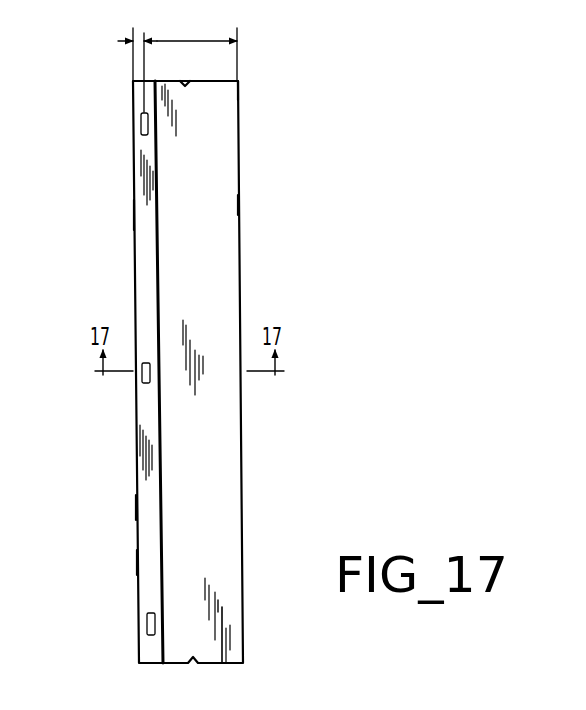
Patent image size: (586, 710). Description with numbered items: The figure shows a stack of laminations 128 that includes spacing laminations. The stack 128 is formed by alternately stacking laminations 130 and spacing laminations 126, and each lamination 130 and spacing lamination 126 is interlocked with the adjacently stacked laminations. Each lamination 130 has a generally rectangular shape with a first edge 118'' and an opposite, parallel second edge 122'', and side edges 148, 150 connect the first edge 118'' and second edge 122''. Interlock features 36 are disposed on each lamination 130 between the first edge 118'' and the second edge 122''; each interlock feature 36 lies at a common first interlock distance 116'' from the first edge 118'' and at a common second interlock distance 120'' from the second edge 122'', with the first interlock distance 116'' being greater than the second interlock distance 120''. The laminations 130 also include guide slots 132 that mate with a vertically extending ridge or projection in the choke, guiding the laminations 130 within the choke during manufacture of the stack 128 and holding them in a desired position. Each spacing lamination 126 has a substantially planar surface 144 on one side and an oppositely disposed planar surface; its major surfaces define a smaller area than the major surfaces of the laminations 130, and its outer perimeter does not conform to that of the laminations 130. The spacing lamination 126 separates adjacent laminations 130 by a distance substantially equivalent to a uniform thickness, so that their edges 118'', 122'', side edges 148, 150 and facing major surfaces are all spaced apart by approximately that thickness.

The interlock features 36 is at (141, 125).
The first interlock distance 116'' is at (228, 45).
The first edge 118'' is at (232, 372).
The second interlock distance 120'' is at (101, 60).
The second edge 122'' is at (100, 215).
The spacing lamination 126 is at (140, 563).
The stack of laminations 128 is at (258, 203).
The lamination 130 is at (218, 607).
The guide slot 132 is at (185, 86).
The planar surface 144 is at (147, 507).
The side edge 148 is at (218, 78).
The side edge 150 is at (222, 662).